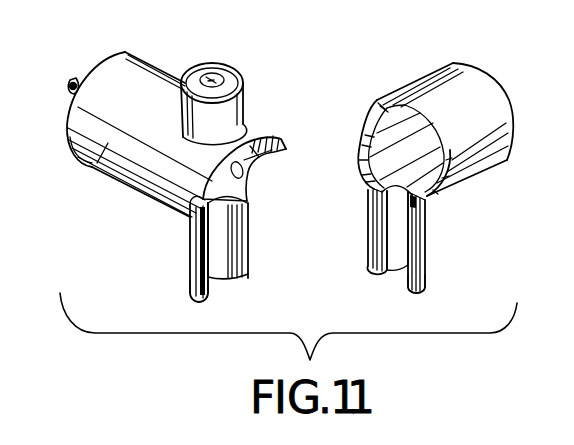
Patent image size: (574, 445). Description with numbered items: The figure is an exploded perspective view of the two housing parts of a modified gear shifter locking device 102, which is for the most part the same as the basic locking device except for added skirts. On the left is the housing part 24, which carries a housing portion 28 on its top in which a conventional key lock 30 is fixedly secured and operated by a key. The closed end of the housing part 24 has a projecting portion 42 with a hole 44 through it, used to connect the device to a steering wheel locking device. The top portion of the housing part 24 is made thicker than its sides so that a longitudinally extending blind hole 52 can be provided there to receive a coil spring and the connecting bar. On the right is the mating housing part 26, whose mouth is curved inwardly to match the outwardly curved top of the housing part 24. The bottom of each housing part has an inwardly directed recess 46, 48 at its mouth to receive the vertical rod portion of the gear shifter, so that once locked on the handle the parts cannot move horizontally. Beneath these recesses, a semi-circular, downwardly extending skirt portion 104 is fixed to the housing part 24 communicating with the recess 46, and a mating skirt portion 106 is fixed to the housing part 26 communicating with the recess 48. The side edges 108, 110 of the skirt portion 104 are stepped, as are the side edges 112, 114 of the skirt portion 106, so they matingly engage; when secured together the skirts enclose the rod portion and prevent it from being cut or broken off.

The housing part 24 is at (93, 157).
The housing part 26 is at (490, 101).
The housing portion 28 is at (220, 115).
The key lock 30 is at (238, 82).
The projecting portion 42 is at (77, 78).
The hole 44 is at (70, 91).
The recess 46 is at (232, 220).
The recess 48 is at (377, 199).
The blind hole 52 is at (243, 170).
The gear shifter locking device 102 is at (323, 78).
The skirt portion 104 is at (188, 245).
The skirt portion 106 is at (427, 229).
The side edge 108 is at (193, 273).
The side edge 110 is at (249, 250).
The side edge 112 is at (407, 282).
The side edge 114 is at (369, 230).